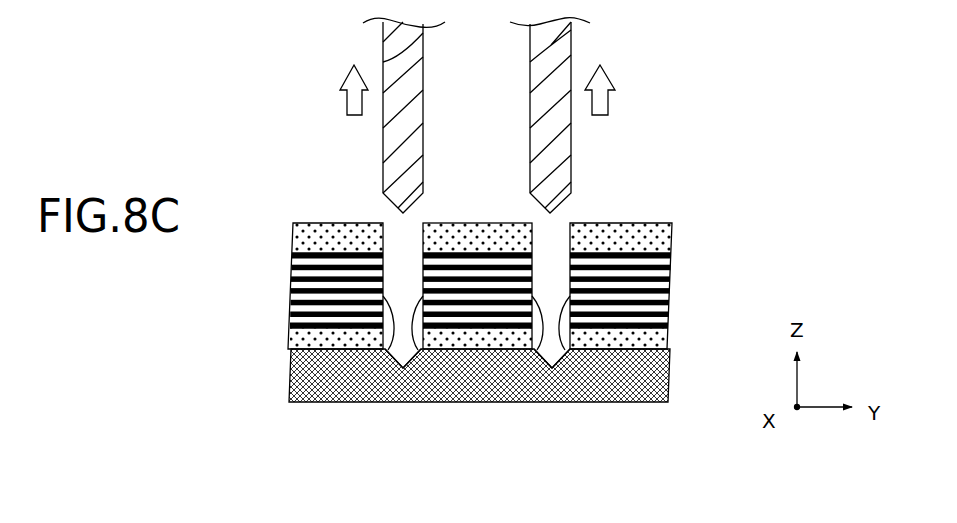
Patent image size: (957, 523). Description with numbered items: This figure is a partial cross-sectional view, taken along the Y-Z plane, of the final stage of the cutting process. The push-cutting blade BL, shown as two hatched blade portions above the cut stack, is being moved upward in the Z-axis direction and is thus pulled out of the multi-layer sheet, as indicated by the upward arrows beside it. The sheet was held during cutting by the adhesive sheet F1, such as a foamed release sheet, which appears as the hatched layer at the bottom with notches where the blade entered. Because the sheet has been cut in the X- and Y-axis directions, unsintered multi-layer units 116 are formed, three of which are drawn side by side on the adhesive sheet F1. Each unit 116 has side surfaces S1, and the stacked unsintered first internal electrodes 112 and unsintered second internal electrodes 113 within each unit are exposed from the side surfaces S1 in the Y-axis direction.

The unsintered multi-layer unit 116 is at (320, 208).
The unsintered first internal electrode 112 is at (451, 300).
The unsintered second internal electrode 113 is at (512, 300).
The push-cutting blade BL is at (547, 117).
The adhesive sheet F1 is at (668, 374).
The side surface S1 is at (598, 420).